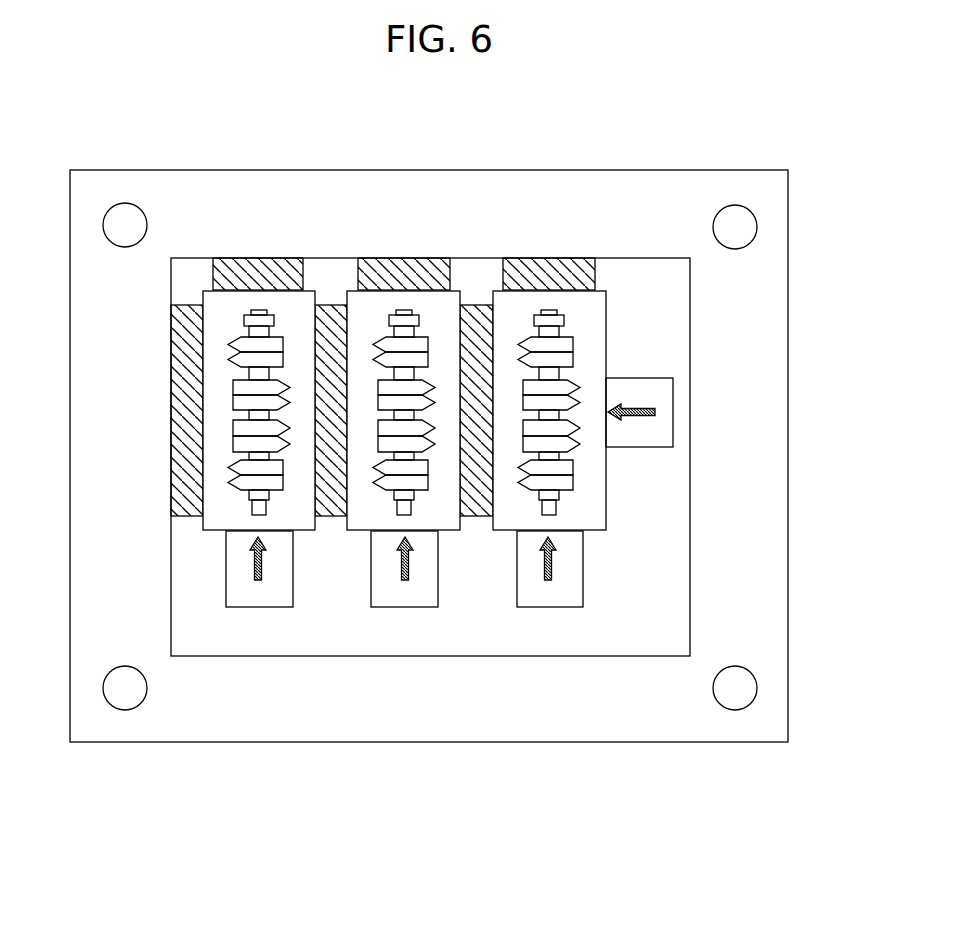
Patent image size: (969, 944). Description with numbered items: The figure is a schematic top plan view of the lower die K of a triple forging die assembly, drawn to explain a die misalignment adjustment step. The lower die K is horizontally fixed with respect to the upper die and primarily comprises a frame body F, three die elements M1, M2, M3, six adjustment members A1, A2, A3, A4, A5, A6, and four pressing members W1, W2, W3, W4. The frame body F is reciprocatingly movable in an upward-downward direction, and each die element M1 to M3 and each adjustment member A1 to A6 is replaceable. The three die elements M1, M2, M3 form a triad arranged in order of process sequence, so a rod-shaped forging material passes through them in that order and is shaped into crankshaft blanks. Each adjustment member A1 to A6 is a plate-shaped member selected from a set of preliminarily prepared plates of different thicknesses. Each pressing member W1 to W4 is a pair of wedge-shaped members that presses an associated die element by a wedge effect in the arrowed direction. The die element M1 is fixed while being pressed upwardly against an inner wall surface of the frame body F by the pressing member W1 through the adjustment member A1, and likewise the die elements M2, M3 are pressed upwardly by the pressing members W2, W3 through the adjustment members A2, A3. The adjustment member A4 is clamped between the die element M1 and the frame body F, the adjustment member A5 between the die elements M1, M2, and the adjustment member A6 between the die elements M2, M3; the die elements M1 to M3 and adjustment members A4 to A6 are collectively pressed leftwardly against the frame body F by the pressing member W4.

The lower die K is at (740, 138).
The frame body F is at (789, 292).
The adjustment member A1 is at (263, 258).
The adjustment member A2 is at (410, 258).
The adjustment member A3 is at (554, 258).
The adjustment member A4 is at (195, 305).
The adjustment member A5 is at (333, 305).
The adjustment member A6 is at (485, 305).
The die element M1 is at (210, 531).
The die element M2 is at (357, 531).
The die element M3 is at (502, 531).
The pressing member W1 is at (257, 607).
The pressing member W2 is at (402, 607).
The pressing member W3 is at (547, 608).
The pressing member W4 is at (673, 413).